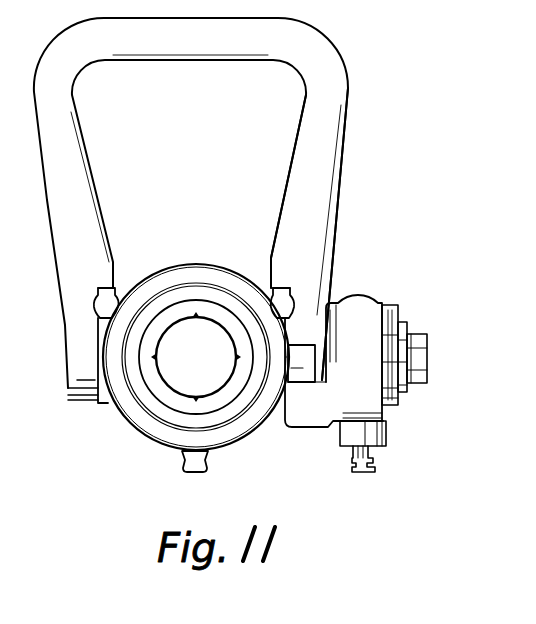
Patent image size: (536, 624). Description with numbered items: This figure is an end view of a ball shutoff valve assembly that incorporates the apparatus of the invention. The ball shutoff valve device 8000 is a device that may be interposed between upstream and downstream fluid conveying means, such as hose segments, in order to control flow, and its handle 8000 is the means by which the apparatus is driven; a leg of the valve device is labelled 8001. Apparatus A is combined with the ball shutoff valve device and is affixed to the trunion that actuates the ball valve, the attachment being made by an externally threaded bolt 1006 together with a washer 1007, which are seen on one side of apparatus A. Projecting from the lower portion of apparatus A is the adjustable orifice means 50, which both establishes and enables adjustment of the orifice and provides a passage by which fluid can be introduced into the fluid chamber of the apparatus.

The ball shutoff valve device 8000 is at (420, 118).
The bail leg 8001 is at (318, 208).
The apparatus A is at (372, 292).
The externally threaded bolt 1006 is at (492, 346).
The washer 1007 is at (490, 440).
The adjustable orifice means 50 is at (388, 436).